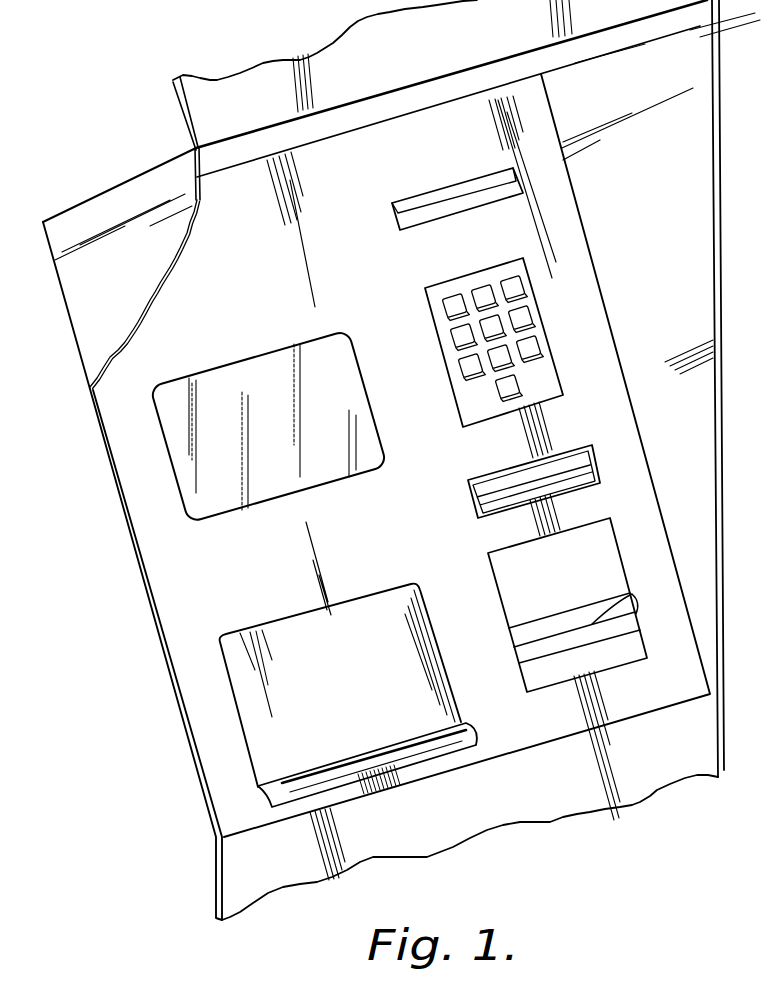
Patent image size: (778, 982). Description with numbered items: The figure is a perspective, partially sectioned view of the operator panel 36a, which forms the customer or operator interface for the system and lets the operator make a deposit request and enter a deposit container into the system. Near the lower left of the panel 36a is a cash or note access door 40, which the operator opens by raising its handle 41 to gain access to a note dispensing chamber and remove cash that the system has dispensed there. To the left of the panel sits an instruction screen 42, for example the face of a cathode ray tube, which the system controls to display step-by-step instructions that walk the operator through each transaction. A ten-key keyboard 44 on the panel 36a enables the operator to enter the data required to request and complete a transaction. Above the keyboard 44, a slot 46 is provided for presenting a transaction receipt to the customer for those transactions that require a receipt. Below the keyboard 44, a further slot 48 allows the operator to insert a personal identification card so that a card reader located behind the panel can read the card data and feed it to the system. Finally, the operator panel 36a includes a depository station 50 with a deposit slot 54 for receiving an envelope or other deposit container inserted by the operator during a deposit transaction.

The operator panel 36a is at (150, 666).
The cash or note access door 40 is at (425, 645).
The handle 41 is at (478, 733).
The instruction screen 42 is at (268, 377).
The 10-key keyboard 44 is at (465, 397).
The slot 46 is at (392, 205).
The further slot 48 is at (468, 497).
The depository station 50 is at (503, 577).
The deposit slot 54 is at (631, 602).